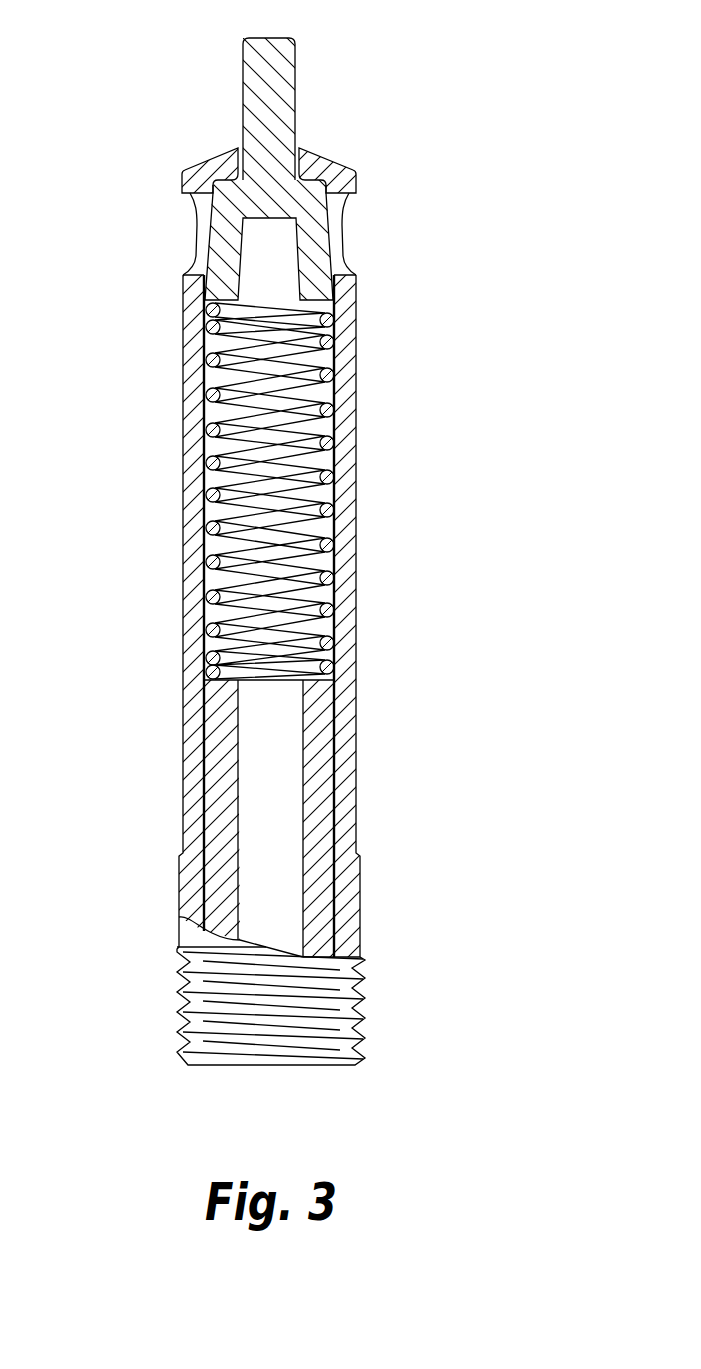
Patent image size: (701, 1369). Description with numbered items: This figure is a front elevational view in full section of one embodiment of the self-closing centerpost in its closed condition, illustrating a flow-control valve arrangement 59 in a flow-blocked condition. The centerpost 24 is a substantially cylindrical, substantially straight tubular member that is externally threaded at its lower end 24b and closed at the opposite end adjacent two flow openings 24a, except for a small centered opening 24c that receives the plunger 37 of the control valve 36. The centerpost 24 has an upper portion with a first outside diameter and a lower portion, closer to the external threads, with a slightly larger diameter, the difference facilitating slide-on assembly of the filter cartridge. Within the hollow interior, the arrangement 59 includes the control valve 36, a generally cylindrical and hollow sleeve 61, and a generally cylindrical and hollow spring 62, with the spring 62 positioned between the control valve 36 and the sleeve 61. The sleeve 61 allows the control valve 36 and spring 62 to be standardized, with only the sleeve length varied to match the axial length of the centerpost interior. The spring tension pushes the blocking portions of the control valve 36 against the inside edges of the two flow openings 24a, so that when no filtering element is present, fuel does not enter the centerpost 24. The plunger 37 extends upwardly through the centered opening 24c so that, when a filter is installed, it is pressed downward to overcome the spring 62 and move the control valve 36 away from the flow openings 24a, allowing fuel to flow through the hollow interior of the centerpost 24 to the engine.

The flow-control valve arrangement 59 is at (440, 146).
The plunger 37 is at (273, 78).
The centered opening 24c is at (300, 139).
The flow openings 24a is at (203, 217).
The control valve 36 is at (223, 262).
The centerpost 24 is at (347, 400).
The spring 62 is at (262, 377).
The sleeve 61 is at (217, 755).
The externally threaded end 24b is at (180, 1000).